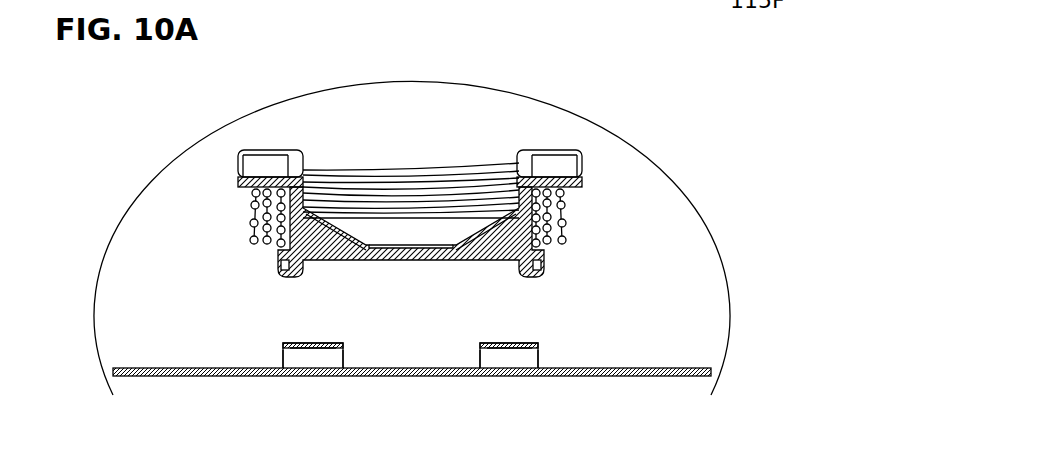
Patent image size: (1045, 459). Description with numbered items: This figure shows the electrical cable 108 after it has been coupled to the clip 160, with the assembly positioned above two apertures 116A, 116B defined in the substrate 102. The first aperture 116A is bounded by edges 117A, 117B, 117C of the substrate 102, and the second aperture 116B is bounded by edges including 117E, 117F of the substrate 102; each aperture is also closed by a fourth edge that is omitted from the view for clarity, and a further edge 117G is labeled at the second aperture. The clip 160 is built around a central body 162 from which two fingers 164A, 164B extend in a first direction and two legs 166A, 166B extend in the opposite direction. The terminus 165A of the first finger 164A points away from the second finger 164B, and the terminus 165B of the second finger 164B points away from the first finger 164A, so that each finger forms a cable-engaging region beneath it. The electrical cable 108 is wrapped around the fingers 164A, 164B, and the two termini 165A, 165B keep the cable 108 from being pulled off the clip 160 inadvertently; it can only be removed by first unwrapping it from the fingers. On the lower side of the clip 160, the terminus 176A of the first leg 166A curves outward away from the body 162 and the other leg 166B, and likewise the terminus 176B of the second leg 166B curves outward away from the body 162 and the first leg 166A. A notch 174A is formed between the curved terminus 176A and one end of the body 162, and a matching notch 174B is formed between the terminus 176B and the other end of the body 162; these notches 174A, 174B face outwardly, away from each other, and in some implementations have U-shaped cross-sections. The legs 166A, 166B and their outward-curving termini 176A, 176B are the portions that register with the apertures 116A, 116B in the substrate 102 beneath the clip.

The substrate 102 is at (713, 313).
The clip 160 is at (168, 127).
The electrical cable 108 is at (407, 170).
The terminus of finger 164A 165A is at (272, 151).
The terminus of finger 164B 165B is at (558, 151).
The finger 164A is at (306, 158).
The finger 164B is at (514, 158).
The notch 174A is at (277, 257).
The notch 174B is at (546, 257).
The terminus of leg 166A 176A is at (278, 275).
The terminus of leg 166B 176B is at (545, 275).
The leg 166A is at (303, 265).
The leg 166B is at (520, 263).
The body 162 is at (437, 260).
The aperture 116A is at (282, 353).
The aperture 116B is at (541, 352).
The edge 117A is at (283, 372).
The edge 117B is at (310, 350).
The edge 117C is at (333, 362).
The edge 117E is at (483, 362).
The edge 117F is at (507, 350).
The pad sidewall 117G is at (533, 365).